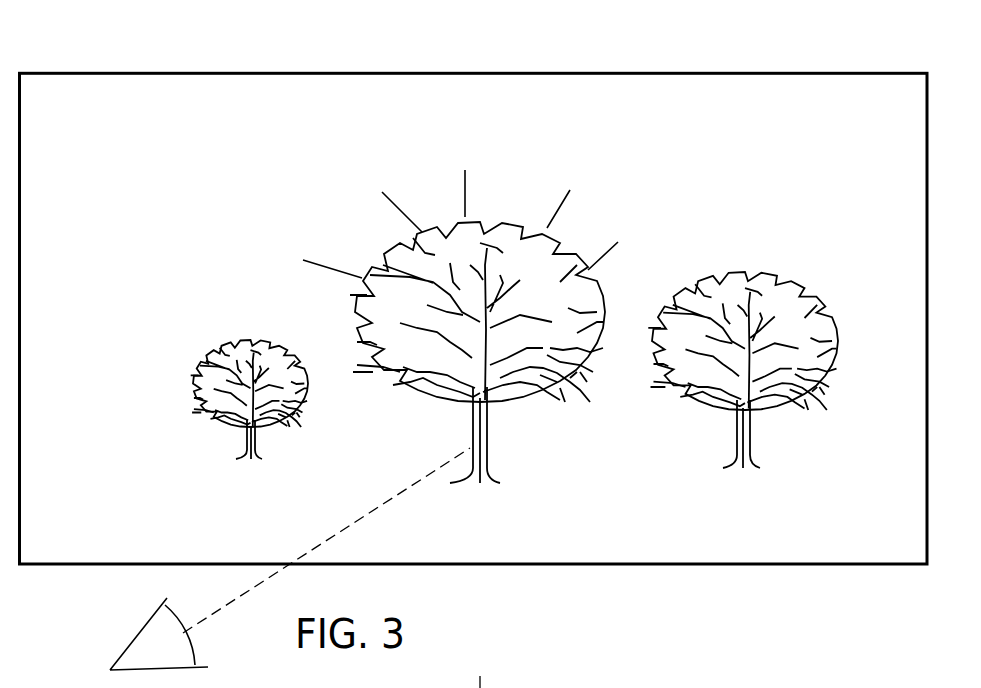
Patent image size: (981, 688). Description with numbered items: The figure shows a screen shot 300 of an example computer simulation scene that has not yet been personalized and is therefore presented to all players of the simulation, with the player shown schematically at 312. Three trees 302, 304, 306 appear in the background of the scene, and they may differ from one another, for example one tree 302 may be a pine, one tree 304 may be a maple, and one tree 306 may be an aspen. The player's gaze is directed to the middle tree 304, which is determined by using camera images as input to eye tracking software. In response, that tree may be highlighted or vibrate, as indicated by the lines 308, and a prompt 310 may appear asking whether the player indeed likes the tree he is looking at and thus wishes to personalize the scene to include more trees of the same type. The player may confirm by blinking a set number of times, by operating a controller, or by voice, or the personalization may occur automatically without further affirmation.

The screen shot 300 is at (479, 68).
The tree 302 is at (198, 382).
The middle tree 304 is at (487, 443).
The tree 306 is at (752, 437).
The lines 308 is at (465, 180).
The prompt 310 is at (685, 107).
The player 312 is at (137, 632).